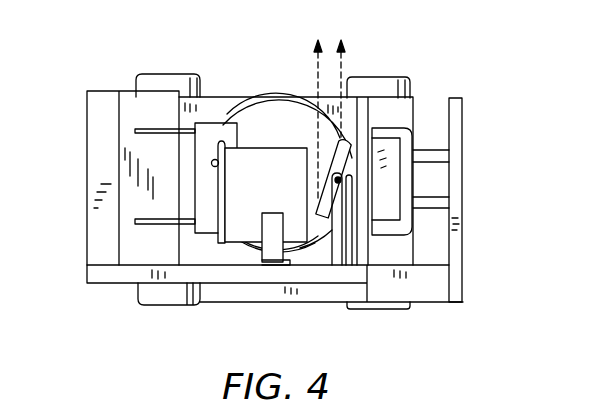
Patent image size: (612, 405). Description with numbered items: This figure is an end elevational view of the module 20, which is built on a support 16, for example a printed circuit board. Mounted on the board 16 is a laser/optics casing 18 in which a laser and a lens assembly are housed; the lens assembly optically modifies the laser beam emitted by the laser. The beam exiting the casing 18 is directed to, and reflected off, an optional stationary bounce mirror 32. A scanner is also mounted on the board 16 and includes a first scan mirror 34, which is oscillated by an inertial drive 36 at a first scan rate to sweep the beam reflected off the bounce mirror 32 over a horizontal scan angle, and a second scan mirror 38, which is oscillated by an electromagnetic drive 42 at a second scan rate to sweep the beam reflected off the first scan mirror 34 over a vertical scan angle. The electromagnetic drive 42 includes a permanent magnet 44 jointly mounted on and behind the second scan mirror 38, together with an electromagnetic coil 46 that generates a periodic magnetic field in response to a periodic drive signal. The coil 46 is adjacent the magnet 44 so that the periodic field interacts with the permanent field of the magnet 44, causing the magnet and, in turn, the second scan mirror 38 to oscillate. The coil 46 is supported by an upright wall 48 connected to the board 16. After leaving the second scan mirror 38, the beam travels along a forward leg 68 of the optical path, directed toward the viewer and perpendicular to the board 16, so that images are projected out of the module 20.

The support 16 is at (102, 270).
The laser/optics casing 18 is at (215, 108).
The module 20 is at (452, 70).
The bounce mirror 32 is at (238, 233).
The first scan mirror 34 is at (205, 185).
The inertial drive 36 is at (135, 110).
The second scan mirror 38 is at (322, 226).
The electromagnetic drive 42 is at (415, 198).
The permanent magnet 44 is at (353, 227).
The electromagnetic coil 46 is at (390, 137).
The upright wall 48 is at (458, 120).
The forward leg 68 is at (327, 78).